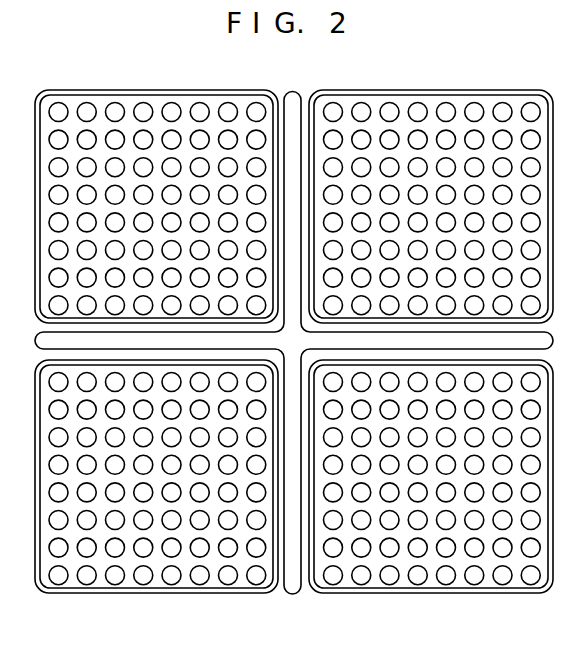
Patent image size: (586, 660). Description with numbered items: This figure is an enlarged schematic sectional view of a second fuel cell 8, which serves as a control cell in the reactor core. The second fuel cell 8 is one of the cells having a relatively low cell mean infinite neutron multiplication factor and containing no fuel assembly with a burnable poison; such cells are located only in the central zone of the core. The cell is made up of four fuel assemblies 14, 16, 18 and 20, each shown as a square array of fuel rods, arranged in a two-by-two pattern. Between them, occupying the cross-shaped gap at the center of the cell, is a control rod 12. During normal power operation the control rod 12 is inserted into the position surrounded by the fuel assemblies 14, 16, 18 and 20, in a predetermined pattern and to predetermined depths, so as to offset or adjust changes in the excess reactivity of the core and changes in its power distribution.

The second fuel cell 8 is at (294, 353).
The control rod 12 is at (292, 93).
The fuel assembly 14 is at (218, 90).
The fuel assembly 16 is at (494, 90).
The fuel assembly 18 is at (183, 594).
The fuel assembly 20 is at (453, 595).